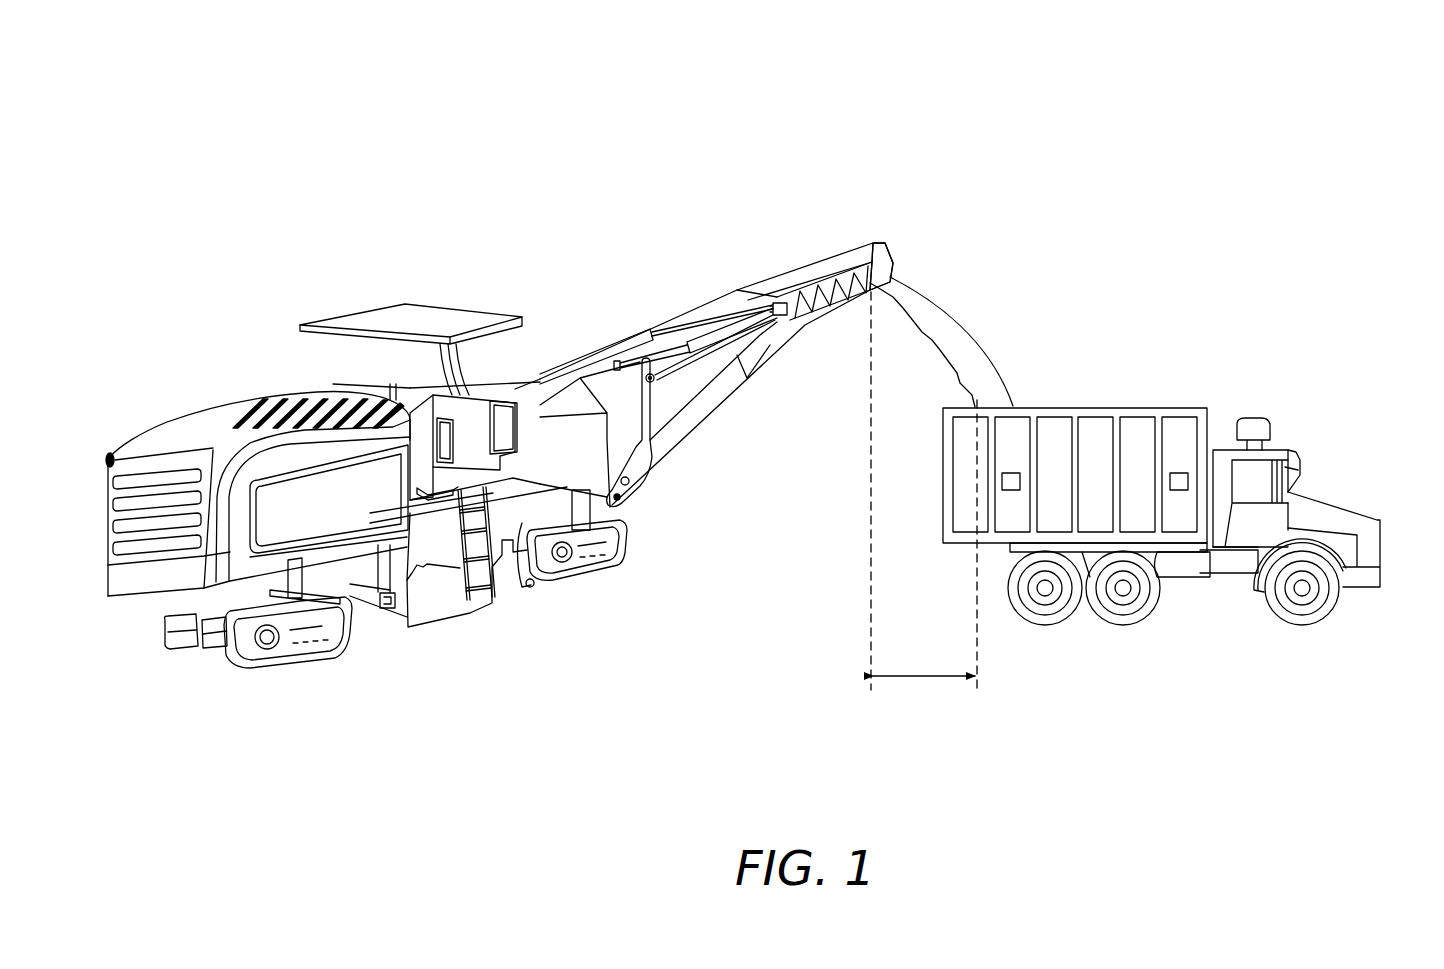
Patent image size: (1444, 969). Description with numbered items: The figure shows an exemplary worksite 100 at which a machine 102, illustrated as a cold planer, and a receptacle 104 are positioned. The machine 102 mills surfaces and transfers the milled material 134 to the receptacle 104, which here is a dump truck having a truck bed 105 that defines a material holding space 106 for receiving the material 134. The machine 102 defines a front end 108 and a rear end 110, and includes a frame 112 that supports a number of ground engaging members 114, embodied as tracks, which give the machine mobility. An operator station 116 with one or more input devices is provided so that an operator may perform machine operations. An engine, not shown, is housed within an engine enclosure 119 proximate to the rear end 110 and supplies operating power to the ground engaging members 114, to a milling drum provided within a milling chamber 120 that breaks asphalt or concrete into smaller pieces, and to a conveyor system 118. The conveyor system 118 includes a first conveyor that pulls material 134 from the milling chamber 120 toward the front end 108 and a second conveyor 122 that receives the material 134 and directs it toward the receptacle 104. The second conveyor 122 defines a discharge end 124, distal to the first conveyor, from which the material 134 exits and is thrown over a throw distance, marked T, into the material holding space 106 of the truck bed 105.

The worksite 100 is at (1247, 112).
The machine 102 is at (463, 213).
The receptacle 104 is at (1315, 343).
The truck bed 105 is at (947, 437).
The material holding space 106 is at (1029, 400).
The front end 108 is at (652, 536).
The rear end 110 is at (132, 624).
The frame 112 is at (433, 520).
The ground engaging members 114 is at (325, 648).
The operator station 116 is at (372, 288).
The conveyor system 118 is at (772, 256).
The engine enclosure 119 is at (243, 463).
The milling chamber 120 is at (442, 562).
The second conveyor 122 is at (839, 230).
The discharge end 124 is at (897, 228).
The milled material 134 is at (955, 315).